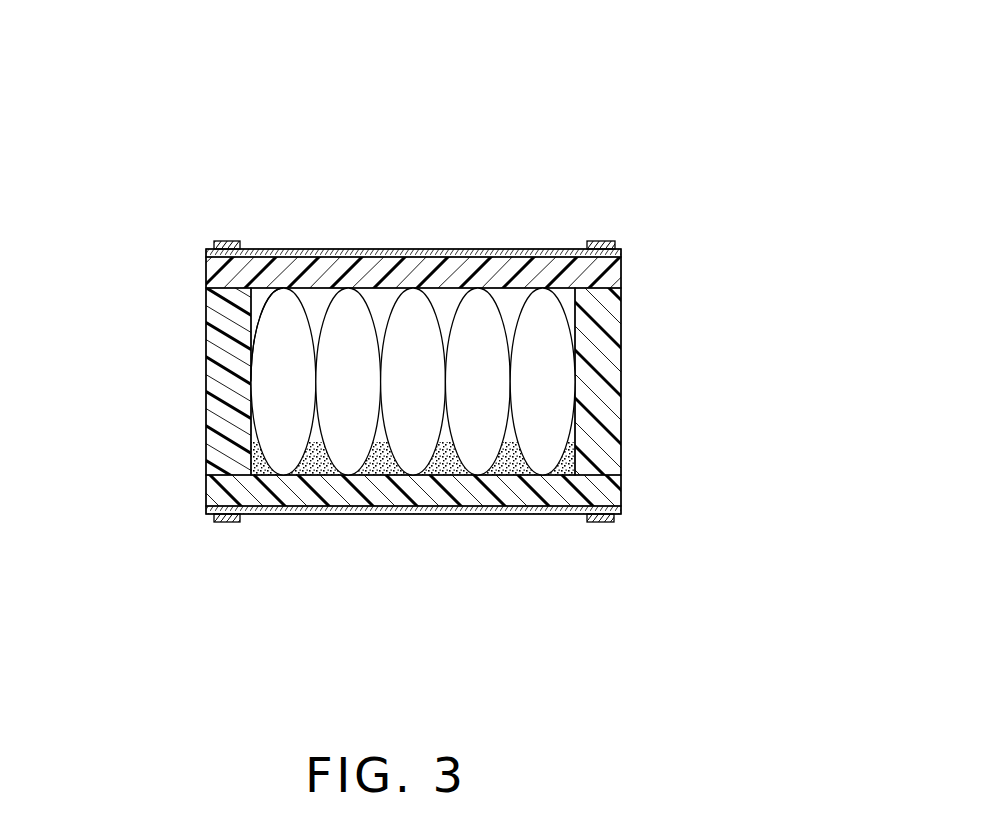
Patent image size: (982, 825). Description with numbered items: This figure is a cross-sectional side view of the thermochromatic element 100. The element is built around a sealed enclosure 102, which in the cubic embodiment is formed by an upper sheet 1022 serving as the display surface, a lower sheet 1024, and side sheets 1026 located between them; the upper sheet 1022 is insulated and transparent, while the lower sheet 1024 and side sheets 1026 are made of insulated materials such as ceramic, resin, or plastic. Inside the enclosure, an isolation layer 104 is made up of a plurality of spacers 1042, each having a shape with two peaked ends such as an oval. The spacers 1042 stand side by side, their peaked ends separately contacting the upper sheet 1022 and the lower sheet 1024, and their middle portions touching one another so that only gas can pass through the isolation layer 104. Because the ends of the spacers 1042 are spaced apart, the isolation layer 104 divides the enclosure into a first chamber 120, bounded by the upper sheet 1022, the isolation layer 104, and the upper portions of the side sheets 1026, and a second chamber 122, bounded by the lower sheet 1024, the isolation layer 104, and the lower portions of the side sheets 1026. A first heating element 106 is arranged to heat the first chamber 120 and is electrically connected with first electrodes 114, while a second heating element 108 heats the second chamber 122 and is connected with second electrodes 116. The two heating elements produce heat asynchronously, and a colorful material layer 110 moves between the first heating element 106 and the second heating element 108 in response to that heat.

The thermochromatic element 100 is at (452, 44).
The sealed enclosure 102 is at (478, 409).
The upper sheet 1022 is at (614, 278).
The lower sheet 1024 is at (620, 483).
The side sheets 1026 is at (604, 350).
The isolation layer 104 is at (434, 287).
The spacers 1042 is at (632, 144).
The first heating element 106 is at (622, 253).
The second heating element 108 is at (485, 514).
The colorful material layer 110 is at (255, 453).
The first electrodes 114 is at (221, 241).
The second electrodes 116 is at (212, 518).
The first chamber 120 is at (262, 302).
The second chamber 122 is at (370, 462).